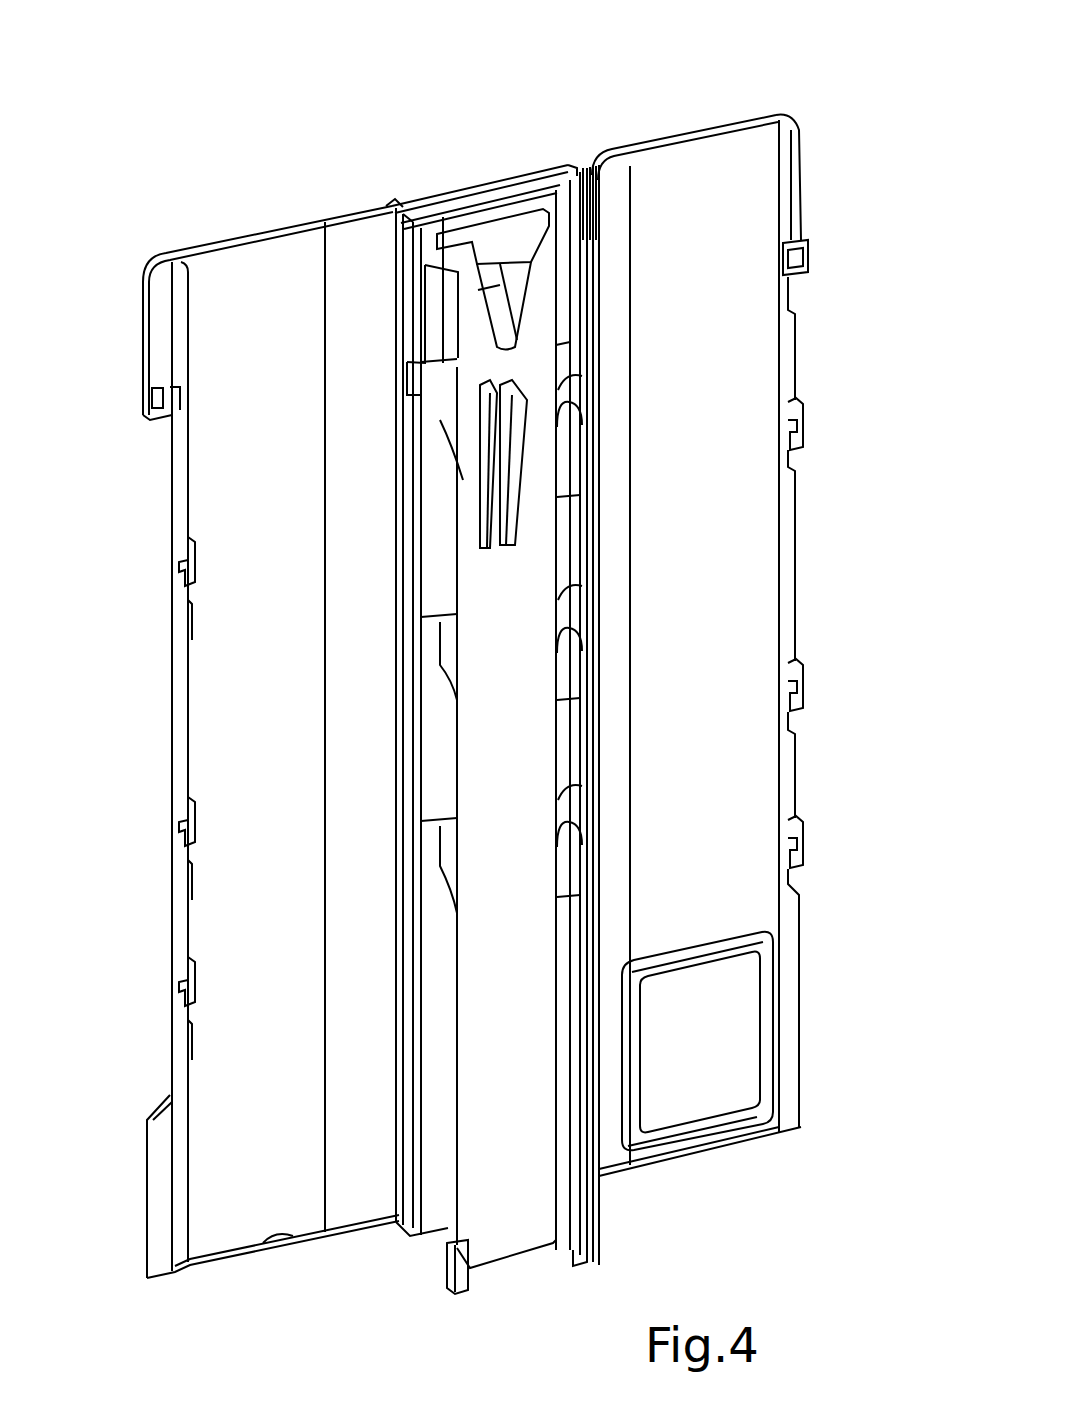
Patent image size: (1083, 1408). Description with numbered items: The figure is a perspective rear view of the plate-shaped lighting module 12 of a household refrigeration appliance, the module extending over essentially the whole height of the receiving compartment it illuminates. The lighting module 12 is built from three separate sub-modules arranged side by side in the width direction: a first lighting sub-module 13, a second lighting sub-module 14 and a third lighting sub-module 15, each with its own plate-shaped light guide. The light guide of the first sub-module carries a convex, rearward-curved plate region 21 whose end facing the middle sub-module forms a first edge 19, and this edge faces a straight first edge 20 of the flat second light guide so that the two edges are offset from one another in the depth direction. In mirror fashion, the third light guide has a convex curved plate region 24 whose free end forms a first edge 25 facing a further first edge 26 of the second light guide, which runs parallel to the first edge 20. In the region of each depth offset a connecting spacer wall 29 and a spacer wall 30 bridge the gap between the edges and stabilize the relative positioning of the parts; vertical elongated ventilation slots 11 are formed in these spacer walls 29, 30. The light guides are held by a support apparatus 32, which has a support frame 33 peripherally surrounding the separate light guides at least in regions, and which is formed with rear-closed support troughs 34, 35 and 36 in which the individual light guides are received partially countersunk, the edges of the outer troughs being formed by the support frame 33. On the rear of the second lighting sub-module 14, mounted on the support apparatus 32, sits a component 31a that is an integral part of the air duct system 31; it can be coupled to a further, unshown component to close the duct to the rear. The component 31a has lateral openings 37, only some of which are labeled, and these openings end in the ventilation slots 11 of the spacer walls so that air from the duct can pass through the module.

The ventilation slots 11 is at (580, 372).
The lighting module 12 is at (462, 112).
The first lighting sub-module 13 is at (733, 106).
The second lighting sub-module 14 is at (477, 160).
The third lighting sub-module 15 is at (282, 190).
The first edge 19 is at (598, 170).
The first edge 20 is at (584, 170).
The curved plate region 21 is at (620, 550).
The curved plate region 24 is at (331, 783).
The first edge 25 is at (393, 226).
The further first edge 26 is at (393, 204).
The spacer wall 29 is at (588, 176).
The spacer wall 30 is at (401, 200).
The air duct system 31 is at (500, 1262).
The component 31a is at (527, 1228).
The support apparatus 32 is at (508, 190).
The support frame 33 is at (150, 324).
The support trough 34 is at (656, 196).
The support trough 35 is at (452, 200).
The support trough 36 is at (267, 318).
The lateral openings 37 is at (560, 377).